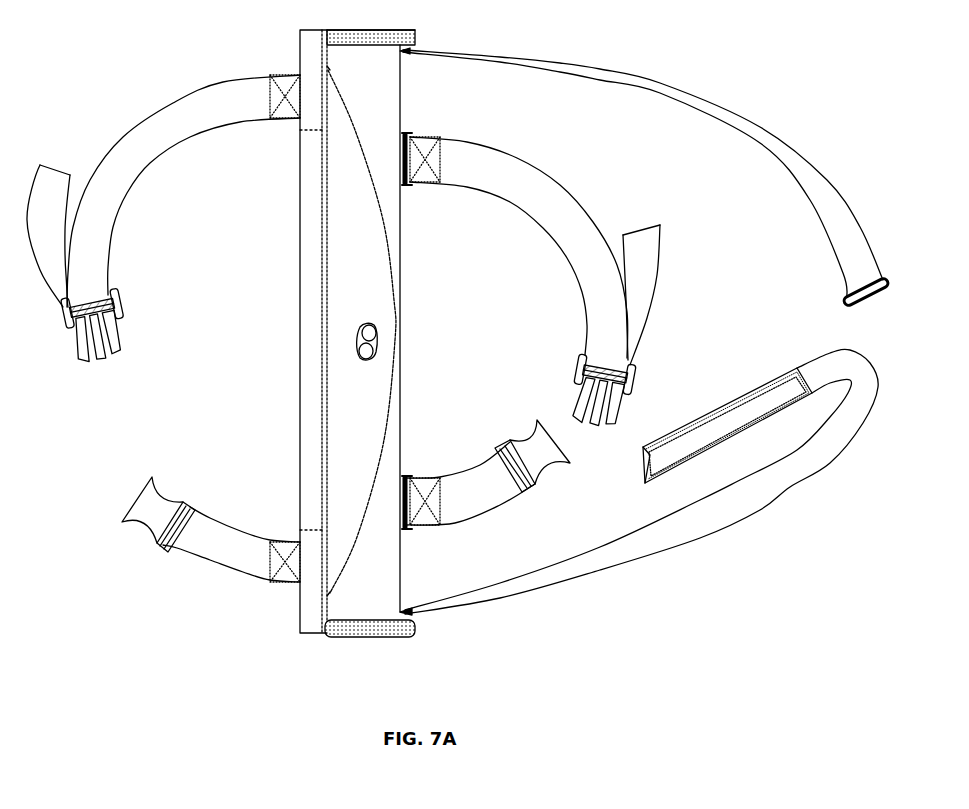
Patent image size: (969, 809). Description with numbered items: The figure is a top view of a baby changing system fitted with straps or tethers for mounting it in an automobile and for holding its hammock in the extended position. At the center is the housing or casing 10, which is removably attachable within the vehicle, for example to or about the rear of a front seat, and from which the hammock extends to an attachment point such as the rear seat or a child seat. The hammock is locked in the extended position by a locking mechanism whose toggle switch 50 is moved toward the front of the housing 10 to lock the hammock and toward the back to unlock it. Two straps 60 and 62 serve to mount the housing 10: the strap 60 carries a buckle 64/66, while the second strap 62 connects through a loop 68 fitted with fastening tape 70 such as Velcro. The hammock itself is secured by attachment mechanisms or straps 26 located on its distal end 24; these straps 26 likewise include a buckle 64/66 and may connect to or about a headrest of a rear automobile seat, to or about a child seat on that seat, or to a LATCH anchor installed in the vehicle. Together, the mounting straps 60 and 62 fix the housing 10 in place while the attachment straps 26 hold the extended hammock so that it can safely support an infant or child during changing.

The housing 10 is at (380, 302).
The distal end 24 is at (303, 405).
The attachment mechanisms 26 is at (192, 103).
The toggle switch 50 is at (378, 335).
The strap 60 is at (555, 195).
The second strap 62 is at (770, 147).
The buckle 64 is at (160, 492).
The buckle 66 is at (118, 318).
The loop 68 is at (845, 302).
The fastening tape 70 is at (730, 412).